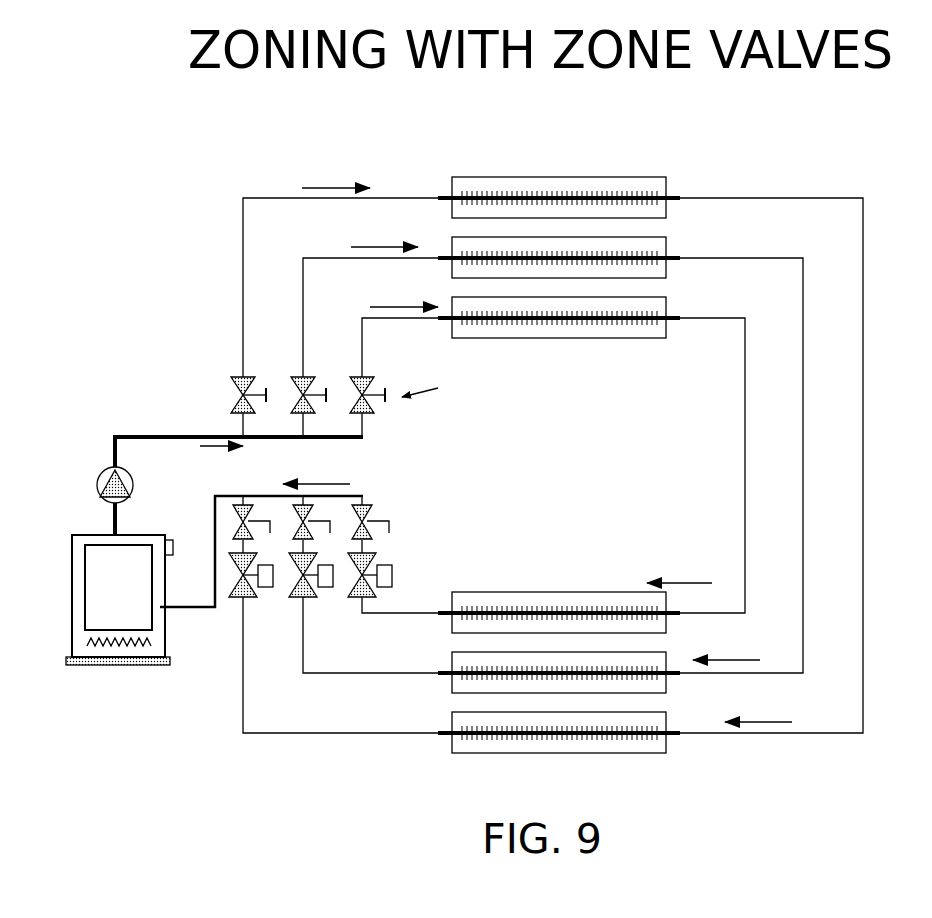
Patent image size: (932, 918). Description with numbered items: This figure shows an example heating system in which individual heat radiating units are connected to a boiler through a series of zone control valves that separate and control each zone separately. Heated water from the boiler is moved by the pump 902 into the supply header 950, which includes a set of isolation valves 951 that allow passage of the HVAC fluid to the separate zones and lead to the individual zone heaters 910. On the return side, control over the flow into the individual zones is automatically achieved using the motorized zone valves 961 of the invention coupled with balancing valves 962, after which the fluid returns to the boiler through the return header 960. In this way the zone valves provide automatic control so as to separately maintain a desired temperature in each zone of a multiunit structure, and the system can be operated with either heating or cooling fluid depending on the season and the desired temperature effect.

The pump 902 is at (133, 485).
The zone heaters 910 is at (663, 298).
The supply header 950 is at (163, 415).
The isolation valves 951 is at (255, 407).
The return header 960 is at (200, 608).
The zone valves 961 is at (405, 563).
The balancing valves 962 is at (383, 535).